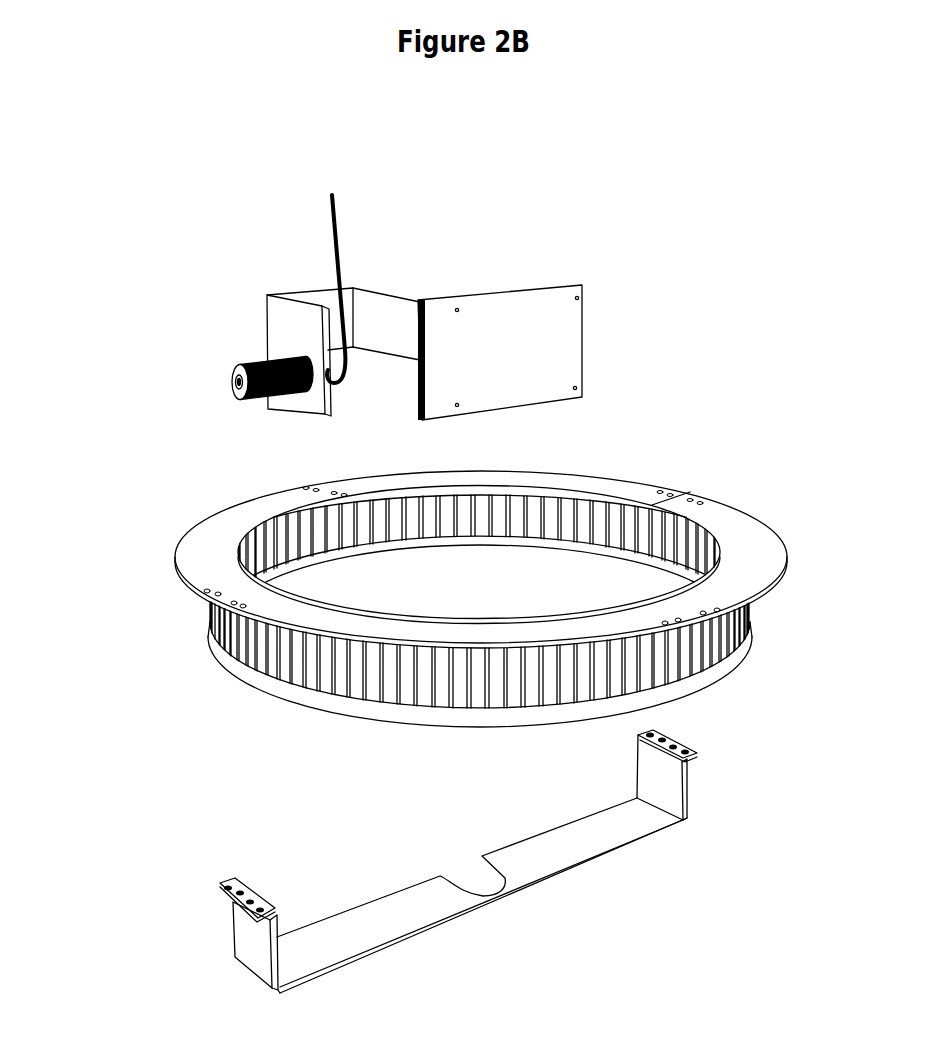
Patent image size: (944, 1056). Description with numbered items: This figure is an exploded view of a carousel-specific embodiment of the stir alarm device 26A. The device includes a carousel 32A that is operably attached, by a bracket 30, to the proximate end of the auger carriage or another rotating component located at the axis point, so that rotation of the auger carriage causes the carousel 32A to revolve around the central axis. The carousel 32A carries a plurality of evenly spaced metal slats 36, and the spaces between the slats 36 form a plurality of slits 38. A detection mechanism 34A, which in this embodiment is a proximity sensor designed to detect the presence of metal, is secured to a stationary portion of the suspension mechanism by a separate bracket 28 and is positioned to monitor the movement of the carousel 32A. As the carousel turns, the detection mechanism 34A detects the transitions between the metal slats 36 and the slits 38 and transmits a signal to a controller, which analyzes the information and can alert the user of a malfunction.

The stir alarm device 26A is at (303, 142).
The bracket 28 is at (558, 322).
The bracket 30 is at (418, 897).
The carousel 32A is at (216, 528).
The detection mechanism 34A is at (255, 358).
The metal slats 36 is at (330, 692).
The slits 38 is at (437, 693).